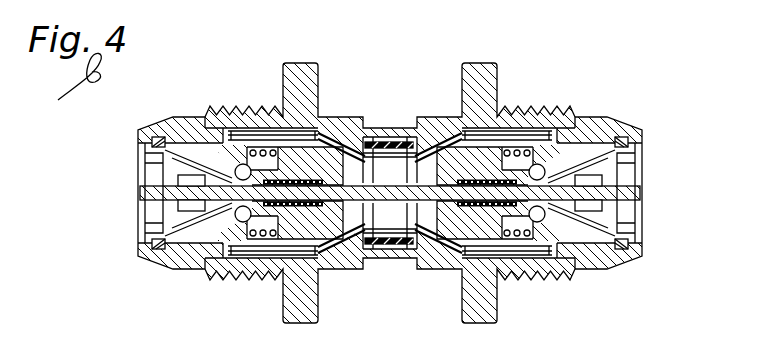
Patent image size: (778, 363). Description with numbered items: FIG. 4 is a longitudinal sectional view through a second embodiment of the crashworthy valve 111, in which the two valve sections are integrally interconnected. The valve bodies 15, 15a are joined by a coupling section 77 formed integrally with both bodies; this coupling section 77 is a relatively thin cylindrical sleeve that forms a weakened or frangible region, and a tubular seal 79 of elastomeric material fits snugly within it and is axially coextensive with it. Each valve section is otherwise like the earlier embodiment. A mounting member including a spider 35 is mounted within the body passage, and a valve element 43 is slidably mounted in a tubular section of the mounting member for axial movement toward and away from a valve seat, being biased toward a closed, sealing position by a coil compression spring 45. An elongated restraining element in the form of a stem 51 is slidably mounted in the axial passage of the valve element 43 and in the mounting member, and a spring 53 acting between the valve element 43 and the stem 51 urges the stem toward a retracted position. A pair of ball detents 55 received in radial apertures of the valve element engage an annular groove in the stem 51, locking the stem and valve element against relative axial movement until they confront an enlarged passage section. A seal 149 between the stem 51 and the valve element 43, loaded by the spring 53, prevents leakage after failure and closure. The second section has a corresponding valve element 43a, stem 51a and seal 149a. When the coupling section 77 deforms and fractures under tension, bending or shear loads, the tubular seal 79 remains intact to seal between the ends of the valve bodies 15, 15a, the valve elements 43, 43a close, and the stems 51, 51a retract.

The crashworthy valve 111 is at (533, 60).
The valve body 15 is at (176, 122).
The valve body 15a is at (620, 127).
The spider 35 is at (190, 245).
The valve element 43 is at (326, 222).
The valve element 43a is at (470, 220).
The coil compression spring 45 is at (258, 150).
The stem 51 is at (176, 192).
The stem 51a is at (610, 193).
The spring 53 is at (313, 176).
The detents 55 is at (197, 237).
The coupling section 77 is at (385, 141).
The tubular seal 79 is at (383, 246).
The seal 149 is at (336, 158).
The seal 149a is at (455, 160).